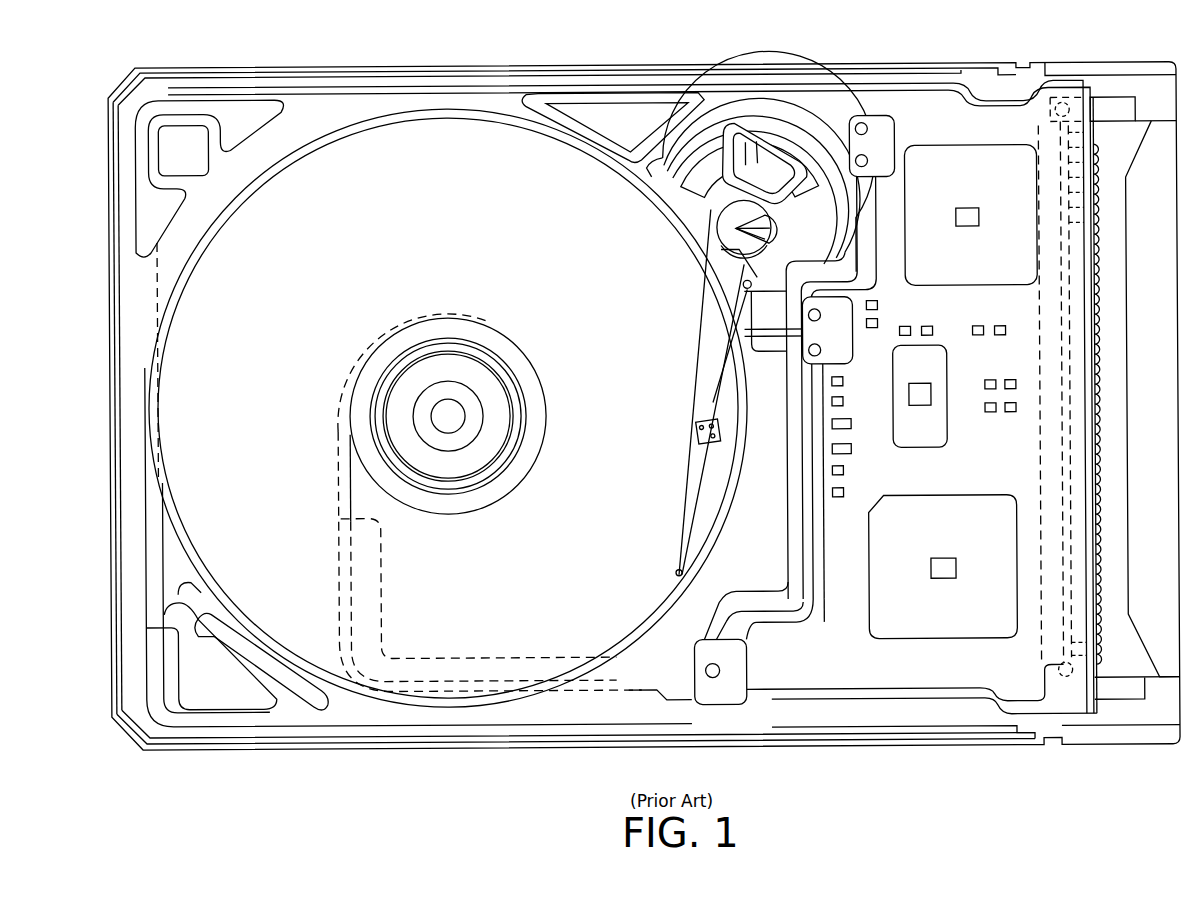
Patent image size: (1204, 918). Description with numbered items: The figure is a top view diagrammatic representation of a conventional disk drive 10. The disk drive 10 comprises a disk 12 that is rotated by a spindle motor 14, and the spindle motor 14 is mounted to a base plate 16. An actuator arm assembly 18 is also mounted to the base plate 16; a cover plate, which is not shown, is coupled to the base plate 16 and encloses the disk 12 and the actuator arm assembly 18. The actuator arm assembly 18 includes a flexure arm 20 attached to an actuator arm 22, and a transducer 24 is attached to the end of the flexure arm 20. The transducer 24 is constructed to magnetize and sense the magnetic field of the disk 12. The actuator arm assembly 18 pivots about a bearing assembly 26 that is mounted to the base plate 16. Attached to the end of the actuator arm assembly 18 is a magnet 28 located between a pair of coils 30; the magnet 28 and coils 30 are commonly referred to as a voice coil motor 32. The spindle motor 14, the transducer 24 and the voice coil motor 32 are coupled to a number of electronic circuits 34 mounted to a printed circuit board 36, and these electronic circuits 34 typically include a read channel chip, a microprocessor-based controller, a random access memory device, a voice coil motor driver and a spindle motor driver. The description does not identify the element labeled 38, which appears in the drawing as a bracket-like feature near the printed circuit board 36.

The disk drive 10 is at (1138, 52).
The disk 12 is at (487, 565).
The spindle motor 14 is at (385, 352).
The base plate 16 is at (318, 90).
The actuator arm assembly 18 is at (692, 386).
The flexure arm 20 is at (690, 492).
The actuator arm 22 is at (712, 402).
The transducer 24 is at (674, 575).
The bearing assembly 26 is at (685, 232).
The magnet 28 is at (765, 158).
The coils 30 is at (790, 148).
The voice coil motor 32 is at (747, 240).
The electronic circuits 34 is at (980, 262).
The printed circuit board 36 is at (807, 670).
The mounting bracket 38 is at (878, 130).